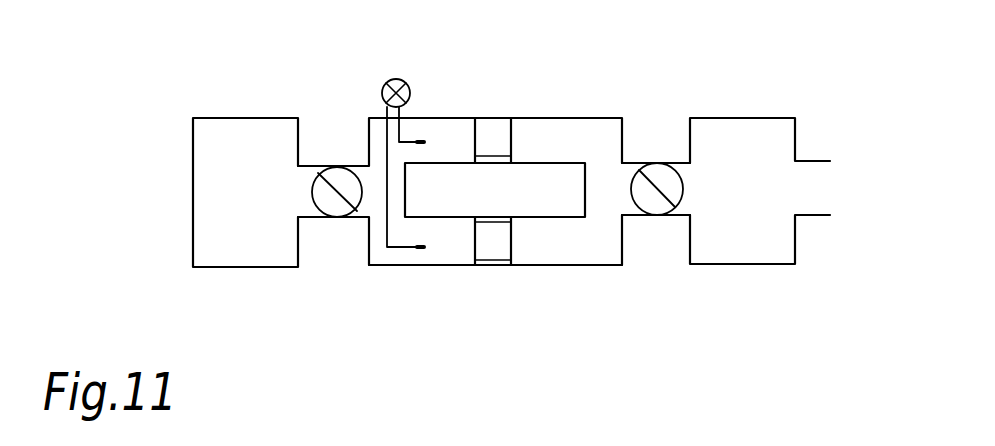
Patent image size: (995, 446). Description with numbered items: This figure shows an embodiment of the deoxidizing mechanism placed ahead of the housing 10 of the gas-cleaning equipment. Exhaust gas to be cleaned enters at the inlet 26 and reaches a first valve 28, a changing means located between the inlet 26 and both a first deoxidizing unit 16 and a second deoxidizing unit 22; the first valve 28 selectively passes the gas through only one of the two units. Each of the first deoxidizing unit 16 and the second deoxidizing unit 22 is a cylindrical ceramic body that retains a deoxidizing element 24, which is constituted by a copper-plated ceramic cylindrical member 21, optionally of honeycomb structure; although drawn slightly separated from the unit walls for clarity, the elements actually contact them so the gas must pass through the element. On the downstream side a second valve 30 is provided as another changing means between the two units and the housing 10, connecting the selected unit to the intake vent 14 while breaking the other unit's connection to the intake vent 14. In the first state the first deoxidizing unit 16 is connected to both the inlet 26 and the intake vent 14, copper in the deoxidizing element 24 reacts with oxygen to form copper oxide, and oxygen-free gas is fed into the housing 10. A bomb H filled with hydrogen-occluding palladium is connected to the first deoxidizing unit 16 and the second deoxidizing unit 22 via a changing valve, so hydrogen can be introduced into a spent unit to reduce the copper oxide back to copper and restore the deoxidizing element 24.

The housing 10 is at (750, 116).
The intake vent 14 is at (693, 183).
The first deoxidizing unit 16 is at (545, 118).
The ceramic cylindrical member 21 is at (513, 145).
The second deoxidizing unit 22 is at (558, 268).
The deoxidizing element 24 is at (491, 144).
The inlet 26 is at (228, 250).
The first valve 28 is at (332, 204).
The second valve 30 is at (652, 205).
The bomb H is at (396, 79).